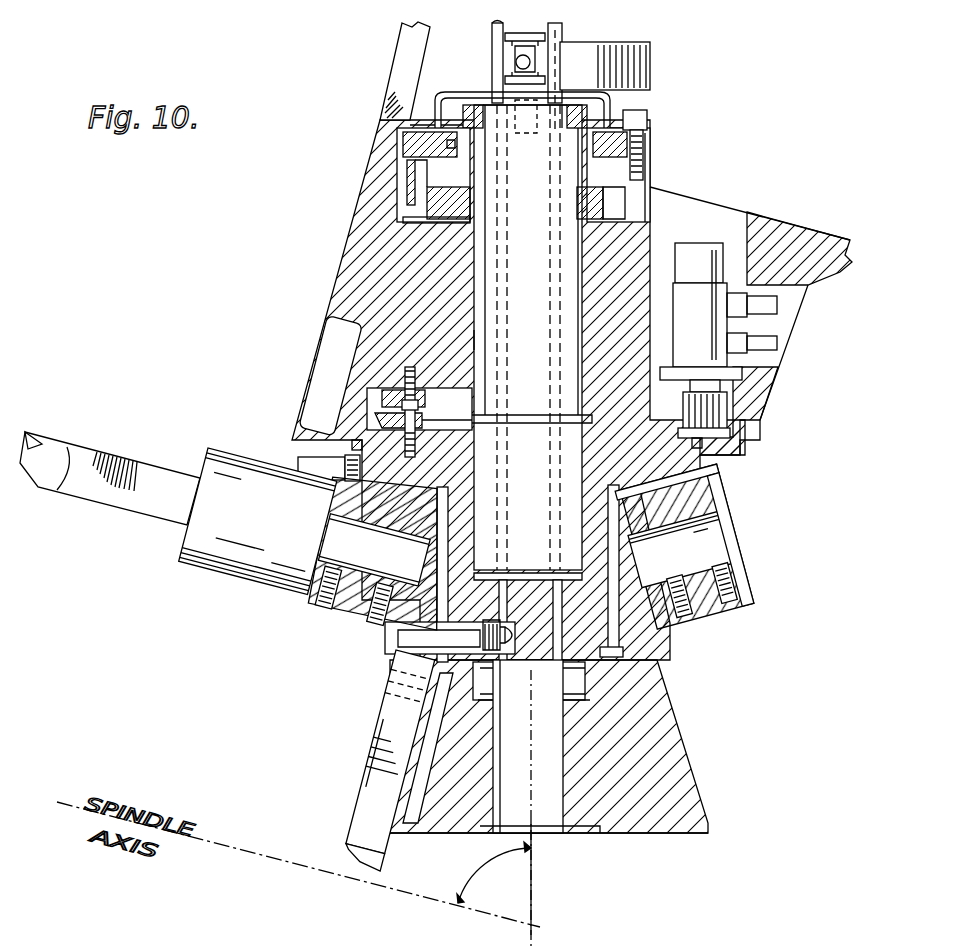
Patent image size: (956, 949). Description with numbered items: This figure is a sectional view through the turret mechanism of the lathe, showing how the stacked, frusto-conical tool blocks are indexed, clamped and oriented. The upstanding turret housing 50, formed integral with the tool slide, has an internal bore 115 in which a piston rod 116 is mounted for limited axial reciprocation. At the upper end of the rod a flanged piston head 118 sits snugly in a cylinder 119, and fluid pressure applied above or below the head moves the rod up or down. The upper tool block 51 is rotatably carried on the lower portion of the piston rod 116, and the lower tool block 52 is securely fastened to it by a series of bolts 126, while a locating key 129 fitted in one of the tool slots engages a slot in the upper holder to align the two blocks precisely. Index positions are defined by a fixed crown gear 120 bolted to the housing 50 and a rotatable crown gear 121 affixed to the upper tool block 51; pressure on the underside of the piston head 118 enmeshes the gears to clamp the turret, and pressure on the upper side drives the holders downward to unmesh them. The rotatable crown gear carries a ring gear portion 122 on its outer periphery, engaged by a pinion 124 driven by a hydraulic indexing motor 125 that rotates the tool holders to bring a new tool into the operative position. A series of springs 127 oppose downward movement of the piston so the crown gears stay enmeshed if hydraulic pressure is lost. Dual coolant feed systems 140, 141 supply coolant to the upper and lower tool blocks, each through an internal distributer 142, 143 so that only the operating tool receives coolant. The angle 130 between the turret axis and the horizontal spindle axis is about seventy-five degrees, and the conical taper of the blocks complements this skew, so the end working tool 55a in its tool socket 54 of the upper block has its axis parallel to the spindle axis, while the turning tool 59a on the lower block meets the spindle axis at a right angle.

The turret housing 50 is at (337, 278).
The upper tool block 51 is at (716, 538).
The lower tool block 52 is at (665, 700).
The tool socket 54 is at (715, 532).
The end working tool 55a is at (128, 465).
The turning tool 59a is at (345, 858).
The internal bore 115 is at (485, 305).
The piston rod 116 is at (480, 348).
The piston head 118 is at (470, 183).
The cylinder 119 is at (453, 220).
The fixed crown gear 120 is at (385, 400).
The rotatable crown gear 121 is at (318, 432).
The ring gear portion 122 is at (705, 430).
The pinion 124 is at (722, 405).
The hydraulic indexing motor 125 is at (705, 248).
The bolts 126 is at (555, 832).
The springs 127 is at (645, 190).
The locating key 129 is at (392, 715).
The angle between turret axis and spindle axis 130 is at (478, 875).
The coolant feed system 140 is at (492, 45).
The coolant feed system 141 is at (558, 40).
The internal distributer 142 is at (437, 562).
The internal distributer 143 is at (537, 680).